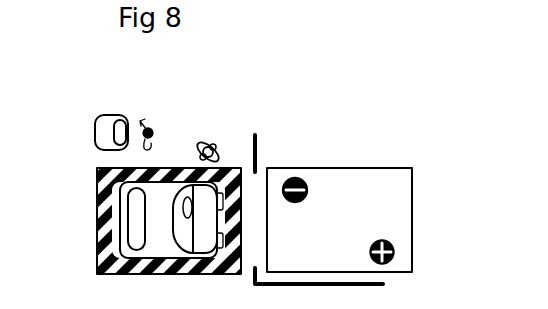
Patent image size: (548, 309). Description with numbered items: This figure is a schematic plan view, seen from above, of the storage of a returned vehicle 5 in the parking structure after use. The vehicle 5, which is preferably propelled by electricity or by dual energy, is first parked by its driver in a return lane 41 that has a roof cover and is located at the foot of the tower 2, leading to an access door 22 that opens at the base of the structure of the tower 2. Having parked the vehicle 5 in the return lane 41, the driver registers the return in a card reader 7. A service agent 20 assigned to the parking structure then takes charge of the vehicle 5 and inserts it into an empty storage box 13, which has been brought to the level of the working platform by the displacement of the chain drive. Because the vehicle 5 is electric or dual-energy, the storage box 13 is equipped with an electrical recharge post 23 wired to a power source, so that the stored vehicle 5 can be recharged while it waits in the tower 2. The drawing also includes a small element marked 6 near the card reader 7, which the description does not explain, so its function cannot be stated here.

The tower 2 is at (254, 135).
The vehicle 5 is at (155, 179).
The key 6 is at (152, 122).
The card reader 7 is at (114, 115).
The storage box 13 is at (360, 173).
The service agent 20 is at (212, 143).
The access door 22 is at (256, 218).
The electrical recharge post 23 is at (296, 177).
The return lane 41 is at (96, 192).